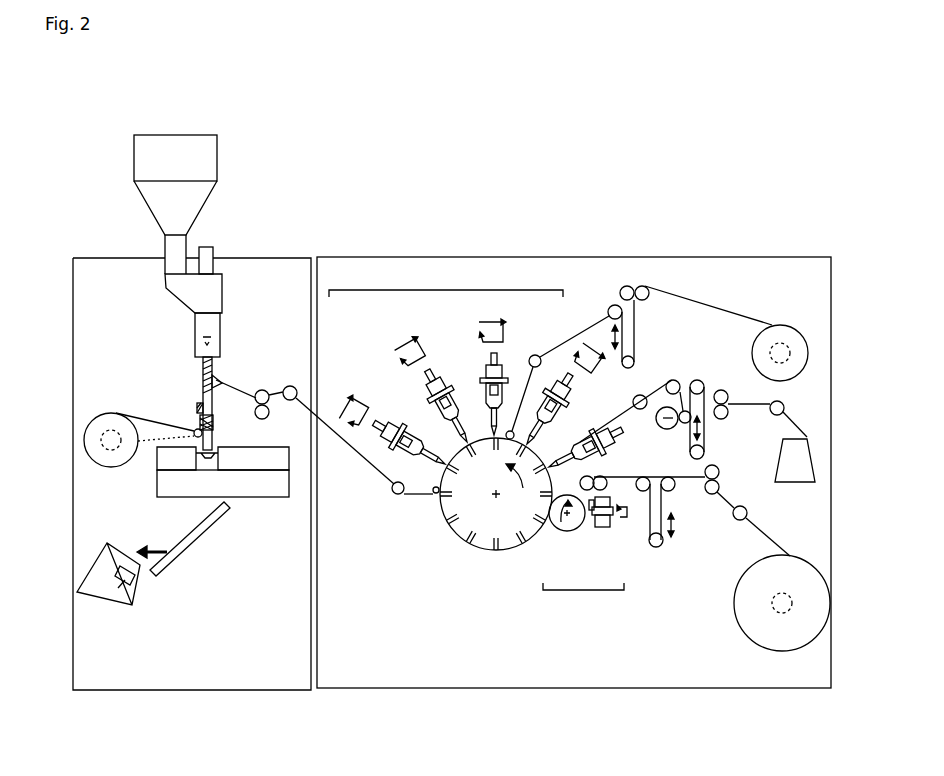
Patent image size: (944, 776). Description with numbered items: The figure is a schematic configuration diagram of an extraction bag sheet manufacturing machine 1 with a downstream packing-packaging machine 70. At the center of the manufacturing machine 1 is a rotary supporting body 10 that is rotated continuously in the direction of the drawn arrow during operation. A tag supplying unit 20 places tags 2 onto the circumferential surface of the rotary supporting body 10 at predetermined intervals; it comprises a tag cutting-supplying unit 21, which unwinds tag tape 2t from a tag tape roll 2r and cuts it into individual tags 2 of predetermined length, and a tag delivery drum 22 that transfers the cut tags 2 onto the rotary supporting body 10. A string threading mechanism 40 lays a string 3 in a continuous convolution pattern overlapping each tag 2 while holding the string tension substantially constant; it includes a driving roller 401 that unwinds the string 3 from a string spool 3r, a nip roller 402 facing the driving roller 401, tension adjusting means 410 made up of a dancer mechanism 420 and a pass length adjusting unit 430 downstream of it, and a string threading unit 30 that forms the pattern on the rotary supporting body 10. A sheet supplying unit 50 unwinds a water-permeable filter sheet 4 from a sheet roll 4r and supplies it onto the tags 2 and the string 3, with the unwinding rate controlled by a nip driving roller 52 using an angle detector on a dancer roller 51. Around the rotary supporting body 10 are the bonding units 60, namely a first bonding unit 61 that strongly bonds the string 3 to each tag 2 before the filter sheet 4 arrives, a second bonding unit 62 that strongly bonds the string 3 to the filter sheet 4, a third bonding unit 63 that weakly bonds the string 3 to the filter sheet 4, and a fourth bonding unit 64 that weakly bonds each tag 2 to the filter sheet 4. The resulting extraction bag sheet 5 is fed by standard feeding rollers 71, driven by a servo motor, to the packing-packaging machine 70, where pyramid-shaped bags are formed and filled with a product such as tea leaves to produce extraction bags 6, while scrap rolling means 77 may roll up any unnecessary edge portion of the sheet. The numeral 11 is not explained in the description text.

The extraction bag sheet manufacturing machine 1 is at (566, 690).
The tags 2 is at (577, 542).
The tag tape roll 2r is at (755, 652).
The tag tape 2t is at (690, 489).
The string 3 is at (752, 403).
The string spool 3r is at (793, 484).
The water-permeable filter sheet 4 is at (725, 314).
The sheet roll 4r is at (799, 380).
The extraction bag sheet 5 is at (371, 470).
The extraction bags 6 is at (112, 606).
The rotary supporting body 10 is at (501, 556).
The holding portions 11 is at (453, 532).
The tag supplying unit 20 is at (583, 602).
The tag cutting-supplying unit 21 is at (606, 530).
The tag delivery drum 22 is at (562, 533).
The string threading unit 30 is at (594, 457).
The string threading mechanism 40 is at (732, 455).
The sheet supplying unit 50 is at (599, 306).
The dancer roller 51 is at (636, 329).
The nip driving roller 52 is at (641, 291).
The bonding units 60 is at (446, 282).
The first bonding unit 61 is at (561, 395).
The second bonding unit 62 is at (486, 377).
The third bonding unit 63 is at (436, 391).
The fourth bonding unit 64 is at (394, 435).
The packing-packaging machine 70 is at (189, 691).
The standard feeding rollers 71 is at (263, 389).
The scrap rolling means 77 is at (99, 412).
The driving roller 401 is at (728, 413).
The nip roller 402 is at (719, 389).
The tension adjusting means 410 is at (679, 381).
The dancer mechanism 420 is at (712, 442).
The pass length adjusting unit 430 is at (676, 430).